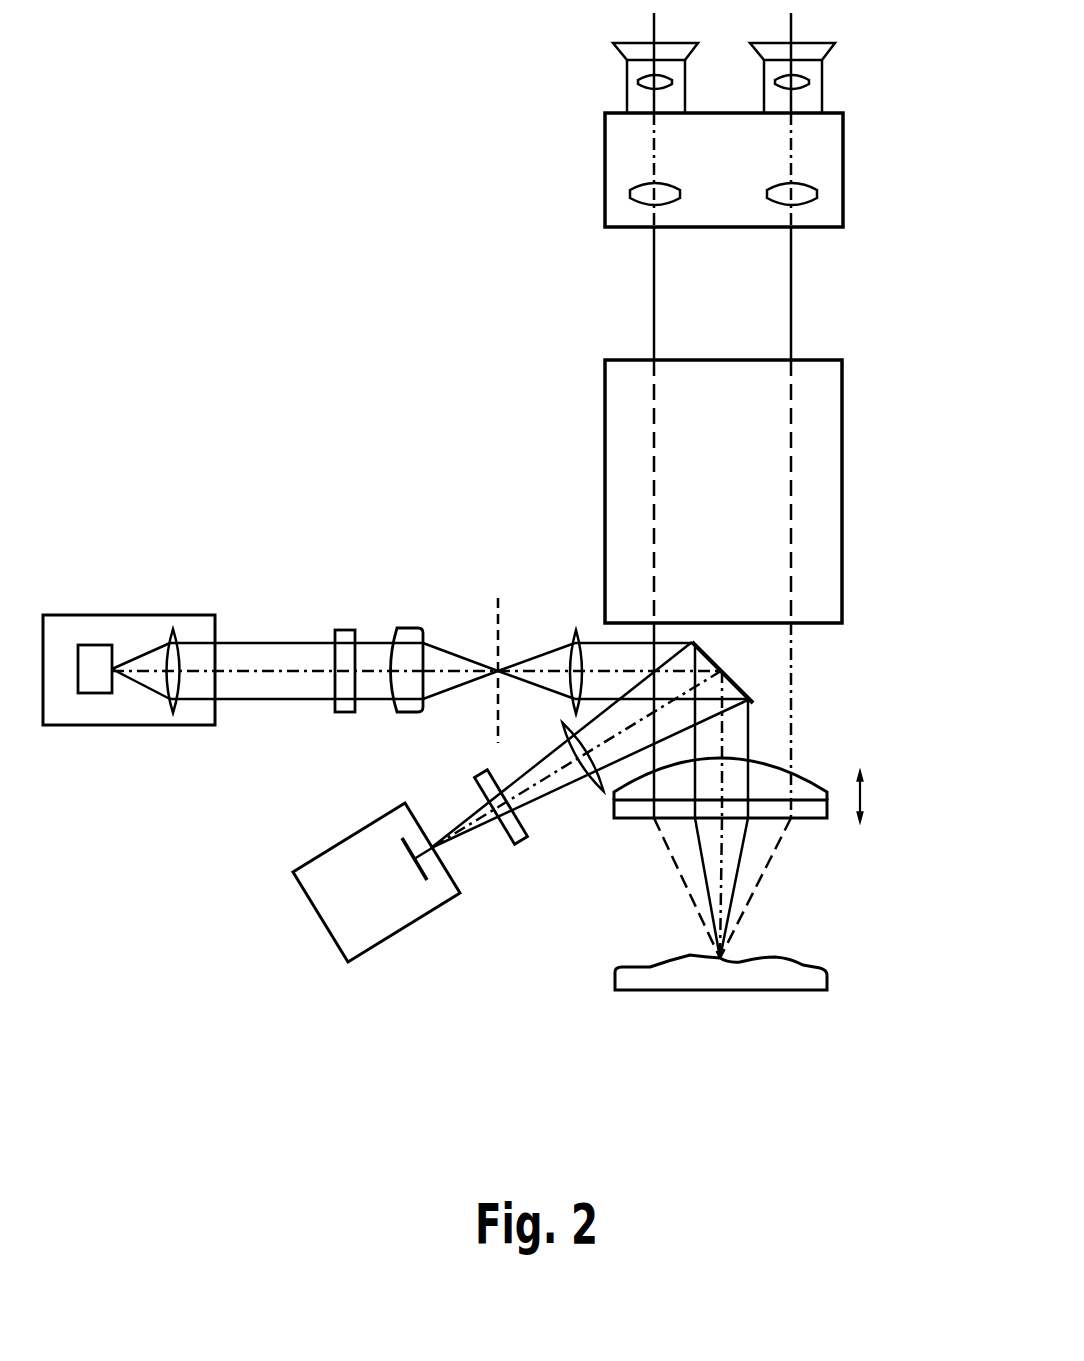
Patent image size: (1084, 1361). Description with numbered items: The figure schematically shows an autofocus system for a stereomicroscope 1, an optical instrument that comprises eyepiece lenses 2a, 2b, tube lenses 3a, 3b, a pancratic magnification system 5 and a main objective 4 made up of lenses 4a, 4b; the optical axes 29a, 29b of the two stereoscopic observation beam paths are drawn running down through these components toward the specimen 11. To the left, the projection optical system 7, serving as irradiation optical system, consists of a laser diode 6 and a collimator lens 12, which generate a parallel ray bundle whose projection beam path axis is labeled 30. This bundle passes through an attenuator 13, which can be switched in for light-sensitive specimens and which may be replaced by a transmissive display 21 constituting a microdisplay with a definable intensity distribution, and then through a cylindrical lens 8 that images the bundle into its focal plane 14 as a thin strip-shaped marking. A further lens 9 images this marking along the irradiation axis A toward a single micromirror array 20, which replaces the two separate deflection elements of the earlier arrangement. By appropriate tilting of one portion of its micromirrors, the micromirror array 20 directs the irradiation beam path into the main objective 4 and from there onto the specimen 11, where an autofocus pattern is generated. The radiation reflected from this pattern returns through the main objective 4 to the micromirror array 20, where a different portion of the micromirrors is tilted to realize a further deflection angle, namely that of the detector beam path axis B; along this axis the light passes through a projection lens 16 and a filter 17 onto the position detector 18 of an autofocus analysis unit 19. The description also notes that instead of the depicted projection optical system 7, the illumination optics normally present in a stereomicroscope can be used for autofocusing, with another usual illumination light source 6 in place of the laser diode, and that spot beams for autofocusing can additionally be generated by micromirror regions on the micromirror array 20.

The stereomicroscope 1 is at (560, 405).
The eyepiece lens 2a is at (640, 82).
The eyepiece lens 2b is at (808, 82).
The tube lens 3a is at (630, 194).
The tube lens 3b is at (818, 194).
The optical axis 29a is at (653, 273).
The optical axis 29b is at (793, 273).
The pancratic magnification system 5 is at (818, 422).
The projection optical system 7 is at (257, 528).
The laser diode 6 is at (93, 682).
The collimator lens 12 is at (168, 635).
The optical axis of the projection beam path 30 is at (270, 675).
The attenuator 13 is at (337, 615).
The transmissive display 21 is at (347, 633).
The cylindrical lens 8 is at (408, 633).
The focal plane 14 is at (497, 635).
The further lens 9 is at (573, 637).
The irradiation axis A is at (435, 675).
The micromirror array 20 is at (747, 677).
The main objective 4 is at (822, 759).
The lens 4a is at (827, 792).
The lens 4b is at (827, 822).
The specimen 11 is at (813, 977).
The detector beam path axis B is at (557, 780).
The projection lens 16 is at (588, 793).
The filter 17 is at (510, 830).
The position detector 18 is at (405, 852).
The autofocus analysis unit 19 is at (393, 913).